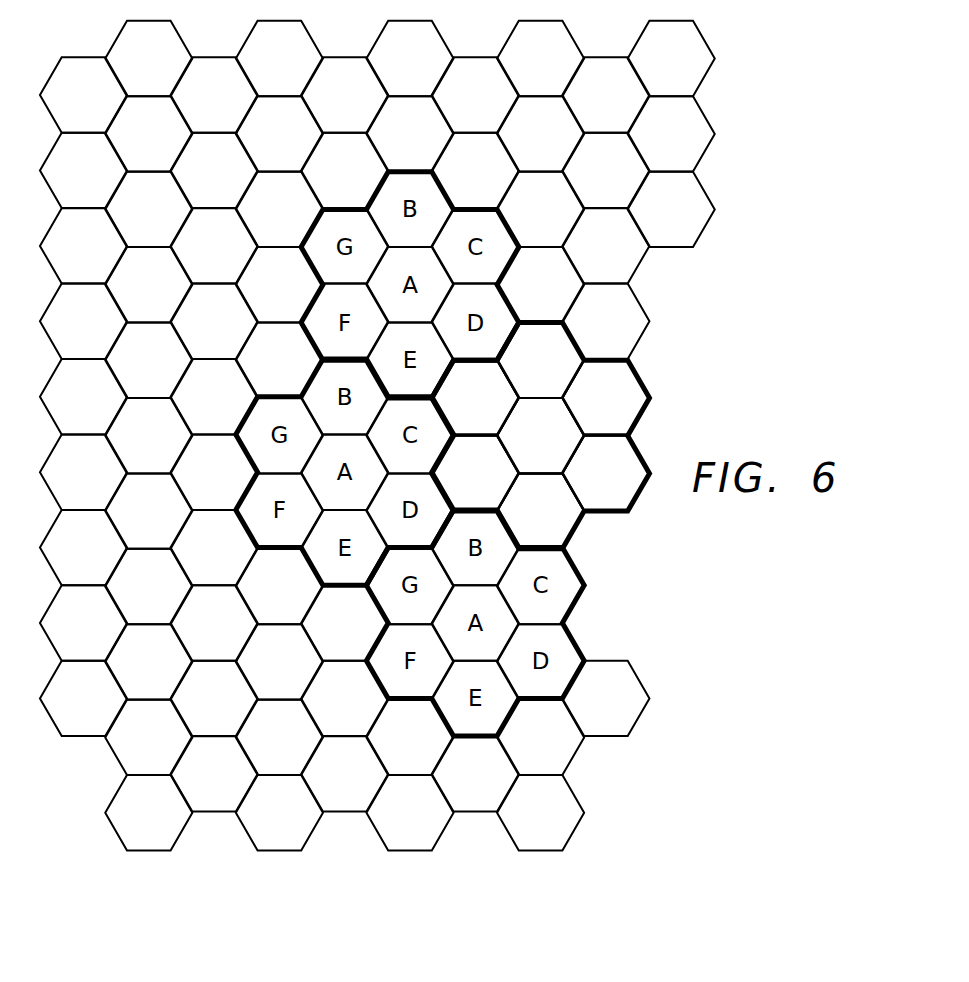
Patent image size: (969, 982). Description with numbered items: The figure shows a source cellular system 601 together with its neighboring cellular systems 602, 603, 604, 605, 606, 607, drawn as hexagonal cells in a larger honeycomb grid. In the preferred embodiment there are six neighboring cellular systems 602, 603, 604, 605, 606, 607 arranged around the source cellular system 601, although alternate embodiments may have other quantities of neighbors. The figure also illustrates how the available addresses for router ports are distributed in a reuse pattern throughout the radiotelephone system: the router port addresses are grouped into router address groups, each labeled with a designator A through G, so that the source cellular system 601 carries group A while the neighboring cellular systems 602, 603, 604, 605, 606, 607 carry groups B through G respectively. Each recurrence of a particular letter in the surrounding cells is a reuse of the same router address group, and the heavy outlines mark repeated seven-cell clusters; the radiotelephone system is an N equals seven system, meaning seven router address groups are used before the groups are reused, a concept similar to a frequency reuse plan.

The source cellular system 601 is at (559, 465).
The neighboring cellular system 602 is at (559, 389).
The neighboring cellular system 603 is at (624, 427).
The neighboring cellular system 604 is at (624, 502).
The neighboring cellular system 605 is at (559, 540).
The neighboring cellular system 606 is at (457, 502).
The neighboring cellular system 607 is at (457, 427).